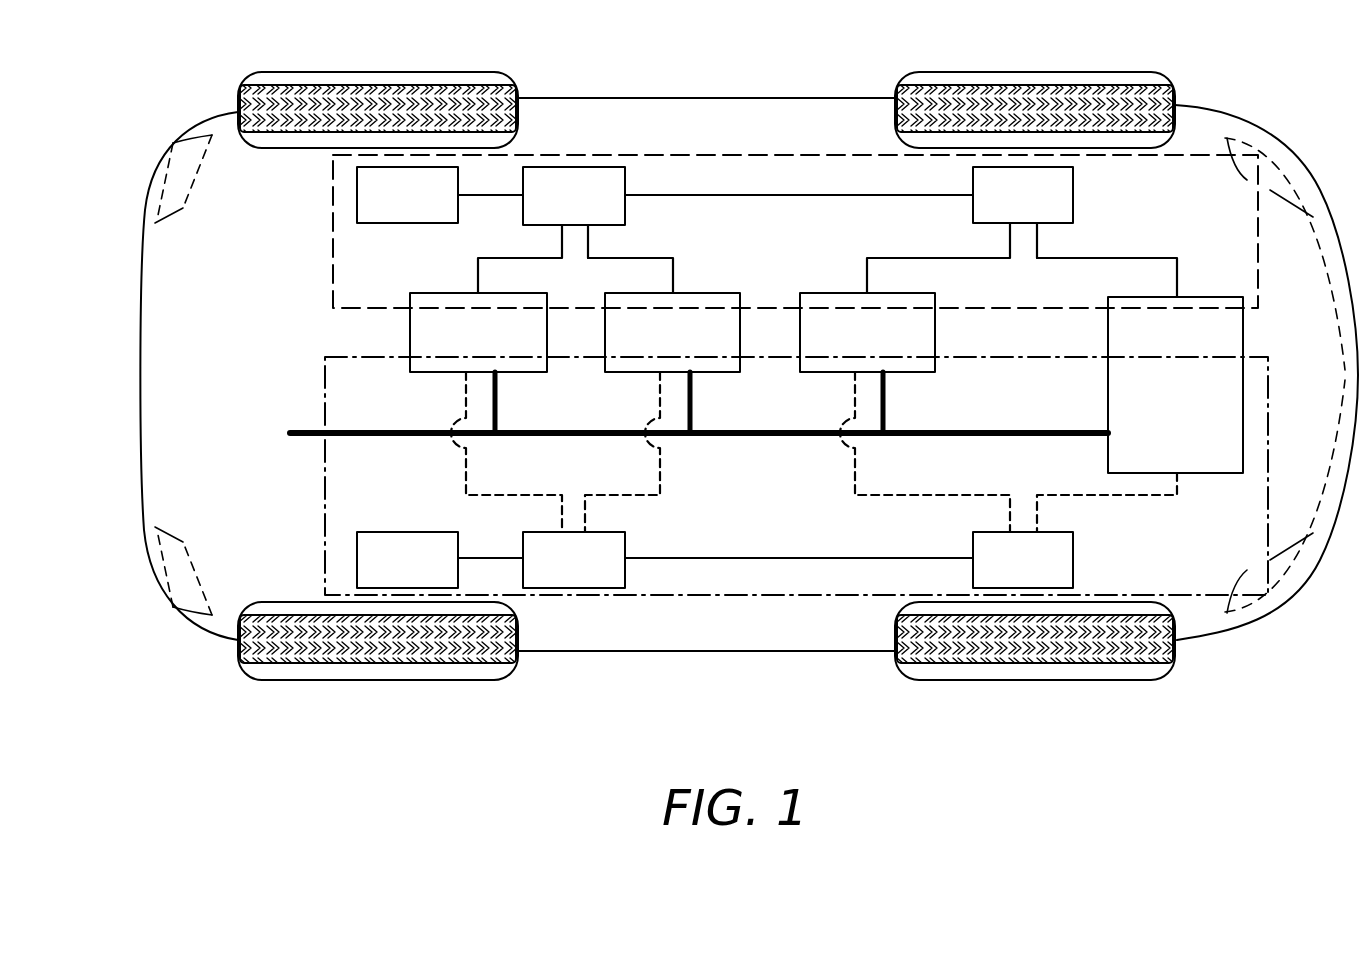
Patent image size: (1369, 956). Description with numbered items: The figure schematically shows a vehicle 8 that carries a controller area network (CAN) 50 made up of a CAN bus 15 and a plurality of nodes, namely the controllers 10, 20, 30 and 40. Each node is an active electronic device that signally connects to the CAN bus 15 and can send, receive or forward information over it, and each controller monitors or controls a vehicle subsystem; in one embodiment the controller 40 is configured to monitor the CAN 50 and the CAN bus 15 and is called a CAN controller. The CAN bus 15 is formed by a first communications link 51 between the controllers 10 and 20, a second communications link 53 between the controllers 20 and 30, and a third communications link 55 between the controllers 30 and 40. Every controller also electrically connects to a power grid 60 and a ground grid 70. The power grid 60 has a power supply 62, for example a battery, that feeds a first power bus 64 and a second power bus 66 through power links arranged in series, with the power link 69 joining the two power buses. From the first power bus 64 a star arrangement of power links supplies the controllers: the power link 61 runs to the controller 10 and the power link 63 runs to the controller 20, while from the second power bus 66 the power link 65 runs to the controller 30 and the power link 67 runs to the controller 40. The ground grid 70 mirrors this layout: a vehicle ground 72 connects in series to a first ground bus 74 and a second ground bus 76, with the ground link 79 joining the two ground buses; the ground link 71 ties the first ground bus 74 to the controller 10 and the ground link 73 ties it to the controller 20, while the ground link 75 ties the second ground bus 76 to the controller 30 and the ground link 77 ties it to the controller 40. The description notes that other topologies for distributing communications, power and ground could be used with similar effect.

The vehicle 8 is at (137, 378).
The controller 10 is at (478, 332).
The CAN bus 15 is at (986, 426).
The controller 20 is at (672, 332).
The controller 30 is at (867, 332).
The controller 40 is at (1175, 385).
The controller area network 50 is at (316, 424).
The first communications link 51 is at (603, 437).
The second communications link 53 is at (742, 437).
The third communications link 55 is at (1035, 437).
The power grid 60 is at (332, 318).
The power link 61 is at (478, 277).
The power supply 62 is at (407, 195).
The power link 63 is at (673, 280).
The first power bus 64 is at (574, 196).
The power link 65 is at (925, 258).
The second power bus 66 is at (1023, 195).
The power link 67 is at (1097, 258).
The power link 69 is at (777, 195).
The ground grid 70 is at (321, 512).
The ground link 71 is at (462, 468).
The vehicle ground 72 is at (407, 560).
The ground link 73 is at (662, 473).
The first ground bus 74 is at (574, 560).
The ground link 75 is at (925, 498).
The second ground bus 76 is at (1023, 560).
The ground link 77 is at (1100, 498).
The ground link 79 is at (713, 558).